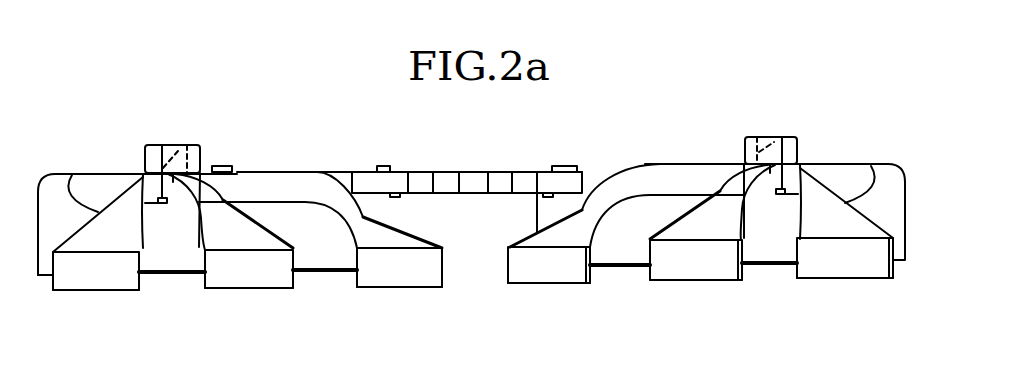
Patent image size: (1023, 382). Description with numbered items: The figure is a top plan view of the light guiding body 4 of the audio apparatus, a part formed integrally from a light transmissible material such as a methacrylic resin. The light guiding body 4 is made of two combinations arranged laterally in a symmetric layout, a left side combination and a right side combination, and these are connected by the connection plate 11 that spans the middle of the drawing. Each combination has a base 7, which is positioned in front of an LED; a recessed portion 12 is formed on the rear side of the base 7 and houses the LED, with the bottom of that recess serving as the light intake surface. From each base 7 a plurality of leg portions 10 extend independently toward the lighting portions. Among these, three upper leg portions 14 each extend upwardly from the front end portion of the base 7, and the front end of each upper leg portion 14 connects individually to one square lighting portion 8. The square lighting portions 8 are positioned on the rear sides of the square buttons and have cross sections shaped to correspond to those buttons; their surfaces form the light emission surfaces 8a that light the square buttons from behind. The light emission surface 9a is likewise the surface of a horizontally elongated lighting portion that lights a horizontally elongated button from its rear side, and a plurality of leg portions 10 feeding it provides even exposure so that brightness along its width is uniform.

The light guiding body 4 is at (938, 108).
The base 7 is at (201, 170).
The square lighting portion 8 is at (92, 278).
The light emission surface 8a is at (125, 293).
The light emission surface 9a is at (325, 273).
The leg portion 10 is at (484, 172).
The connection plate 11 is at (503, 178).
The recessed portion 12 is at (177, 145).
The upper leg portion 14 is at (143, 174).